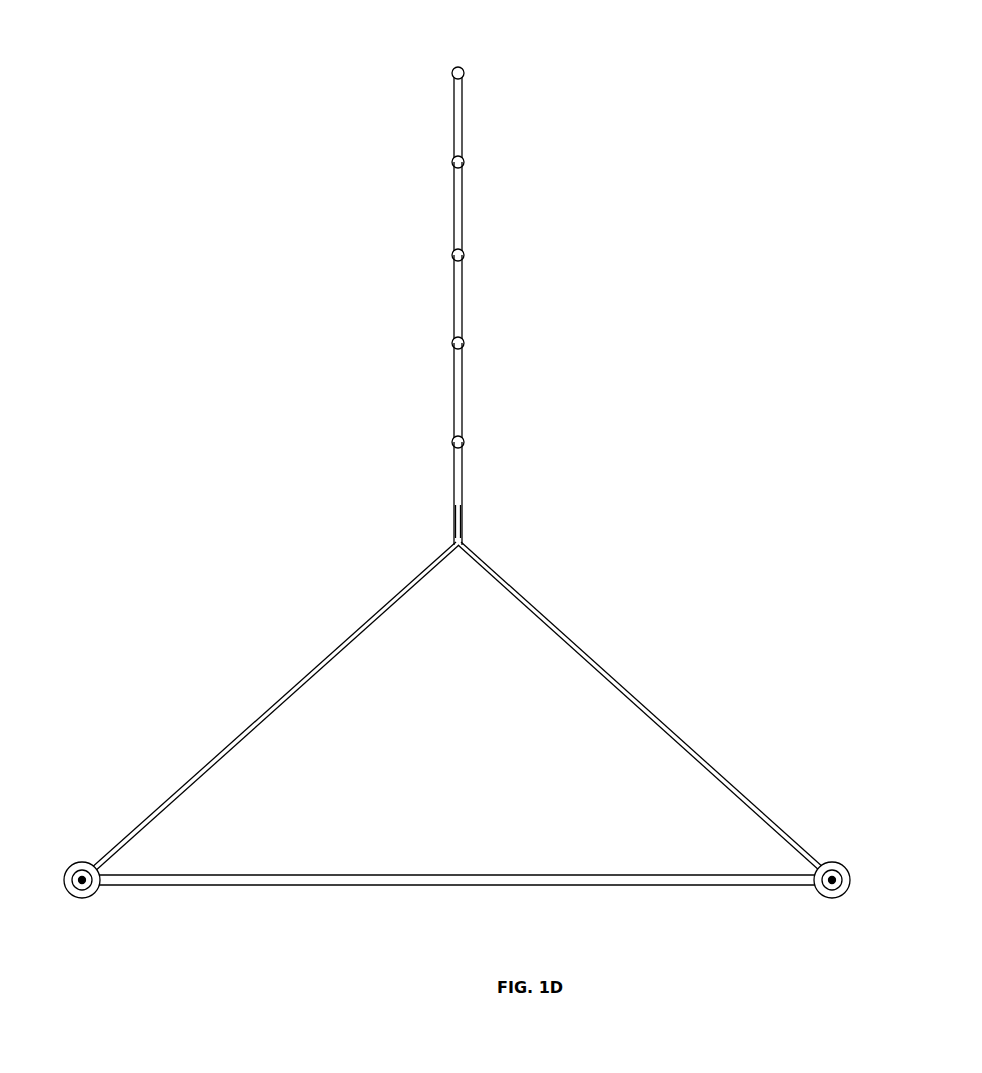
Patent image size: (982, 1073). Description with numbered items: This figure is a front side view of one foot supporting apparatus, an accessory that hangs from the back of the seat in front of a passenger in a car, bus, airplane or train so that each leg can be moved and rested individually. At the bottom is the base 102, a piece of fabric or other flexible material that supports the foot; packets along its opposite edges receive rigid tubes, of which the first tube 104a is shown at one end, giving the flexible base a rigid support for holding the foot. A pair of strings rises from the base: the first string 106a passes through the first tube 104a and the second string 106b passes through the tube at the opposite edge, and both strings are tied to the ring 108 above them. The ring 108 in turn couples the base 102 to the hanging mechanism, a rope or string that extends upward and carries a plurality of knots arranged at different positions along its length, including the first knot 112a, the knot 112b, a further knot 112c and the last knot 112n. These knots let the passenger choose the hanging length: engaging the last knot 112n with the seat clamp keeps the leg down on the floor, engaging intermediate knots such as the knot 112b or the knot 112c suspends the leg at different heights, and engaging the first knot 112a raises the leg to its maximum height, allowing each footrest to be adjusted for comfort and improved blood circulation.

The base 102 is at (420, 875).
The first tube 104a is at (830, 862).
The first string 106a is at (588, 653).
The second string 106b is at (305, 672).
The ring 108 is at (463, 512).
The first knot 112a is at (465, 435).
The knot 112b is at (465, 336).
The strut link 112c is at (458, 211).
The last knot 112n is at (463, 67).